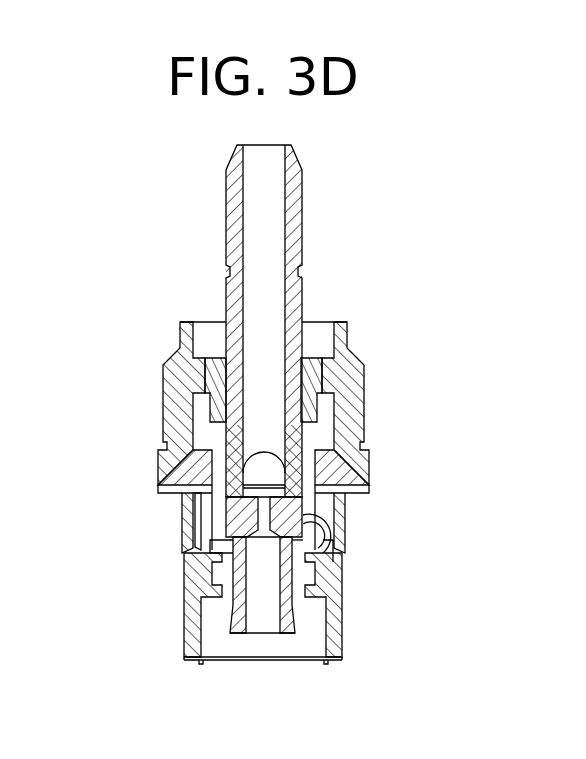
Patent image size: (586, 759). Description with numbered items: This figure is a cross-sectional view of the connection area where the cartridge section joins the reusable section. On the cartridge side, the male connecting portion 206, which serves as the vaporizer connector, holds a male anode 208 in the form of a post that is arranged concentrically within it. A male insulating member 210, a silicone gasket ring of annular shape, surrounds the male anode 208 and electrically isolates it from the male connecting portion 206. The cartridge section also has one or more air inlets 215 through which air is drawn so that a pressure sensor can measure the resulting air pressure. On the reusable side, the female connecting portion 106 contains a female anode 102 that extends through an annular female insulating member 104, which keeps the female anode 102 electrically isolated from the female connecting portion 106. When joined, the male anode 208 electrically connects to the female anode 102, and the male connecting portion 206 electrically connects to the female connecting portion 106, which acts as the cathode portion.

The female anode 102 is at (293, 623).
The female insulating member 104 is at (193, 552).
The female connecting portion 106 is at (185, 623).
The male connecting portion 206 is at (348, 333).
The male anode 208 is at (300, 258).
The male insulating member 210 is at (323, 405).
The air inlets 215 is at (162, 465).